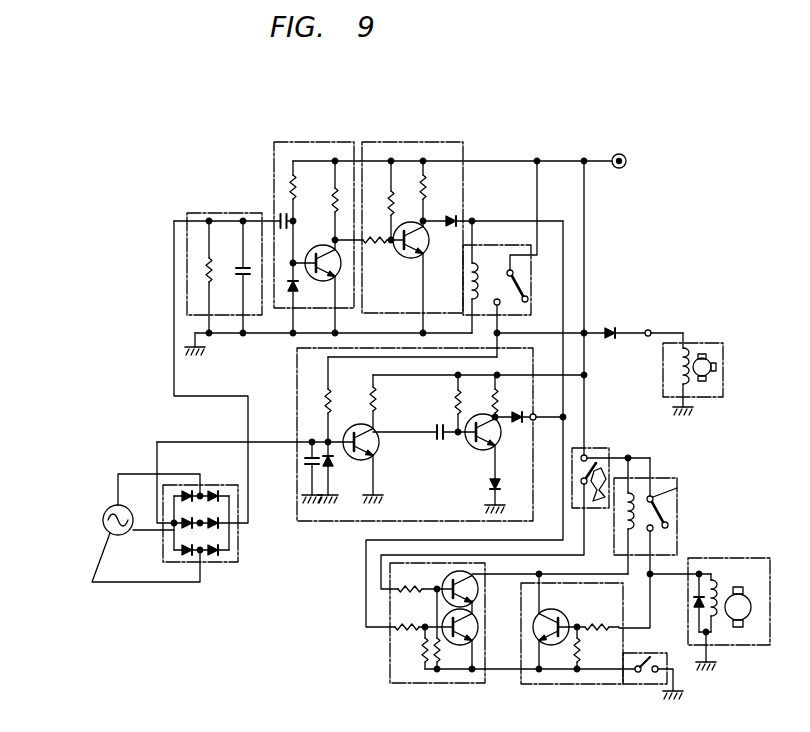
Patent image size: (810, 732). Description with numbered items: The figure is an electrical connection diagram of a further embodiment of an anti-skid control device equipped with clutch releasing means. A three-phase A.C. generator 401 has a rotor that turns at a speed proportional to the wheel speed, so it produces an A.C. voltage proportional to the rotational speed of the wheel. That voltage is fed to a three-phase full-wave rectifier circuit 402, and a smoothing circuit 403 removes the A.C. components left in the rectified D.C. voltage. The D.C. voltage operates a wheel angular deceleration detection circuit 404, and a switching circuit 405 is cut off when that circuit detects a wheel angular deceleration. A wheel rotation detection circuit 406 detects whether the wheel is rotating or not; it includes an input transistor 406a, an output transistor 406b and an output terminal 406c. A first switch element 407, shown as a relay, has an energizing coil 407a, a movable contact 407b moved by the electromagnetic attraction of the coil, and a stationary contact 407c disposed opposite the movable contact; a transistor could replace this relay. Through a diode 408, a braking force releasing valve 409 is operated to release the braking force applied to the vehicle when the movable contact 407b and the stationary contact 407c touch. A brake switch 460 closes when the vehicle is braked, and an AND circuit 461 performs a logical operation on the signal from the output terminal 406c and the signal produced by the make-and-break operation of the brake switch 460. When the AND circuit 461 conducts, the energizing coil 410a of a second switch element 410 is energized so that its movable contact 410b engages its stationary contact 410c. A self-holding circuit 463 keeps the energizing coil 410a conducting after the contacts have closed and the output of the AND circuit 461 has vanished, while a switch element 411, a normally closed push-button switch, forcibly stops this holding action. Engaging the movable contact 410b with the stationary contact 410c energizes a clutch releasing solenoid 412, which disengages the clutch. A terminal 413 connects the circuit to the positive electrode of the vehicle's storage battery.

The three-phase A.C. generator 401 is at (103, 515).
The three-phase full-wave rectifier circuit 402 is at (238, 530).
The smoothing circuit 403 is at (234, 213).
The wheel angular deceleration detection circuit 404 is at (322, 142).
The switching circuit 405 is at (432, 142).
The wheel rotation detection circuit 406 is at (429, 449).
The input transistor 406a is at (373, 458).
The output transistor 406b is at (473, 446).
The output terminal 406c is at (531, 420).
The first switch element 407 is at (491, 248).
The energizing coil 407a is at (470, 280).
The movable contact 407b is at (513, 275).
The stationary contact 407c is at (499, 306).
The diode 408 is at (610, 328).
The braking force releasing valve 409 is at (705, 343).
The second switch element 410 is at (678, 511).
The energizing coil 410a is at (645, 488).
The movable contact 410b is at (678, 498).
The stationary contact 410c is at (656, 530).
The switch element 411 is at (625, 685).
The clutch releasing solenoid 412 is at (740, 646).
The terminal 413 is at (619, 153).
The brake switch 460 is at (603, 448).
The AND circuit 461 is at (440, 684).
The self-holding circuit 463 is at (570, 684).